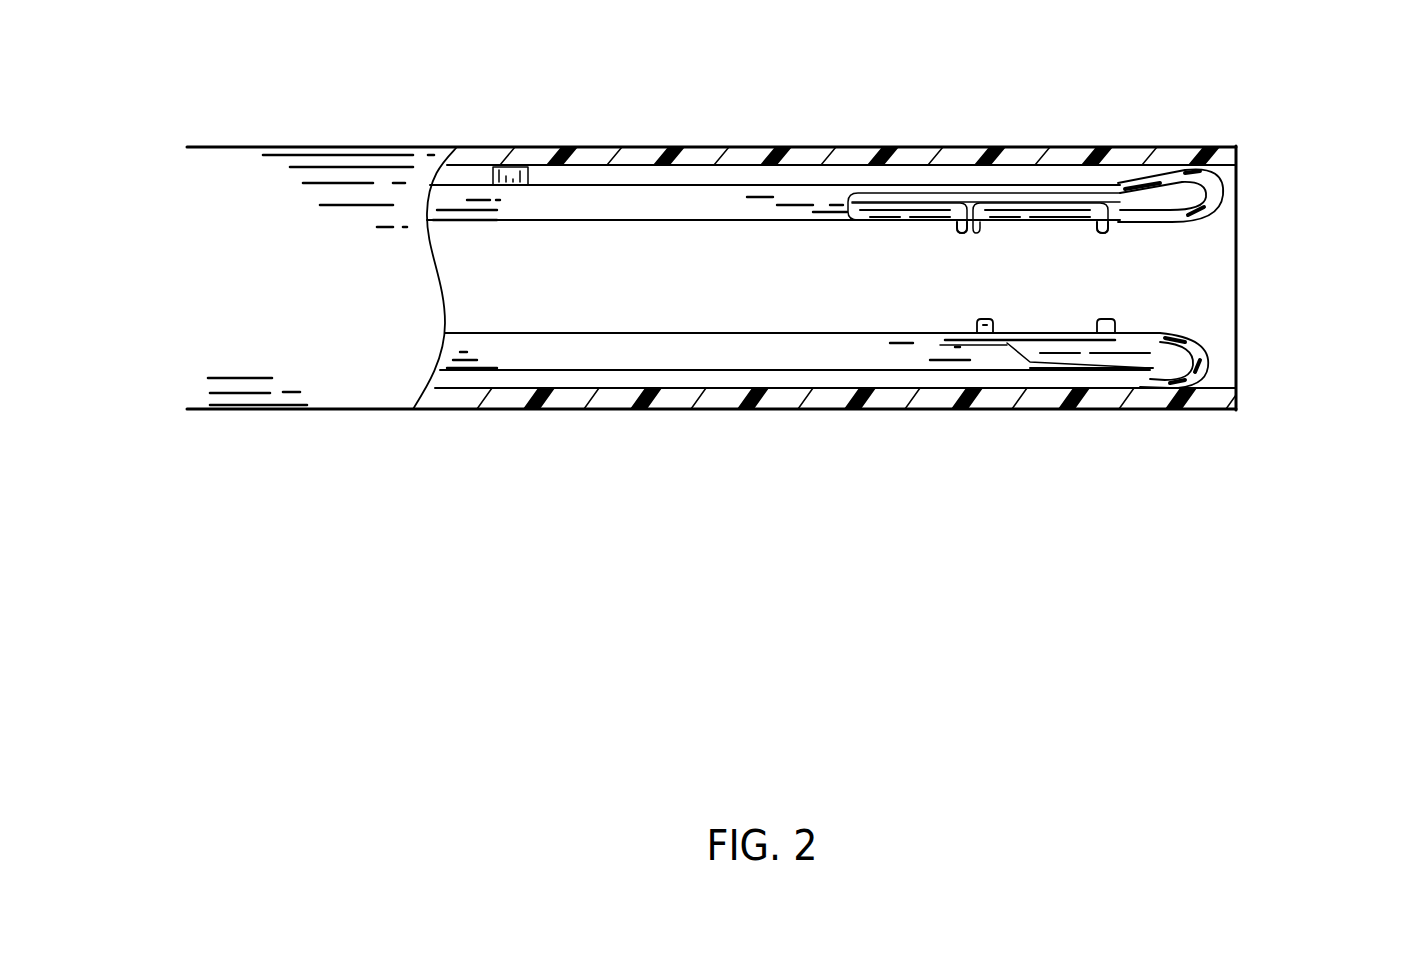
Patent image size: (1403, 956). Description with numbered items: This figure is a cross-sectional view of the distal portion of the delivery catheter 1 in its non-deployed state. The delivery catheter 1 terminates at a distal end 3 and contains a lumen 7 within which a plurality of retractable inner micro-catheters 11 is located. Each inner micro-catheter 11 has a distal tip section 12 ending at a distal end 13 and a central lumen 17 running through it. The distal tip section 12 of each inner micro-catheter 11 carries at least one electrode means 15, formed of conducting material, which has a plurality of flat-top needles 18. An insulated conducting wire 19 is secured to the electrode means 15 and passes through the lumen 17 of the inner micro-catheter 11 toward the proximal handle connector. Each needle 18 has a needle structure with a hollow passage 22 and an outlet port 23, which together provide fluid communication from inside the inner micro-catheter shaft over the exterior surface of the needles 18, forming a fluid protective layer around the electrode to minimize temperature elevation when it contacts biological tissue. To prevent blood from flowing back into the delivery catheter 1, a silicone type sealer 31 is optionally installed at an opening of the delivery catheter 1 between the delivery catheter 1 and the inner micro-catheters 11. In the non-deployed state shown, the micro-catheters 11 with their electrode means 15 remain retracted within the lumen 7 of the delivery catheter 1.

The delivery catheter 1 is at (413, 147).
The distal end 3 is at (1236, 138).
The lumen 7 is at (673, 257).
The inner micro-catheter 11 is at (600, 185).
The distal tip section 12 is at (1176, 315).
The distal end 13 is at (1219, 178).
The electrode means 15 is at (1145, 226).
The central lumen 17 is at (1133, 350).
The needle 18 is at (1113, 243).
The insulated conducting wire 19 is at (1150, 368).
The hollow passage 22 is at (1023, 200).
The outlet port 23 is at (967, 240).
The silicone type sealer 31 is at (528, 147).